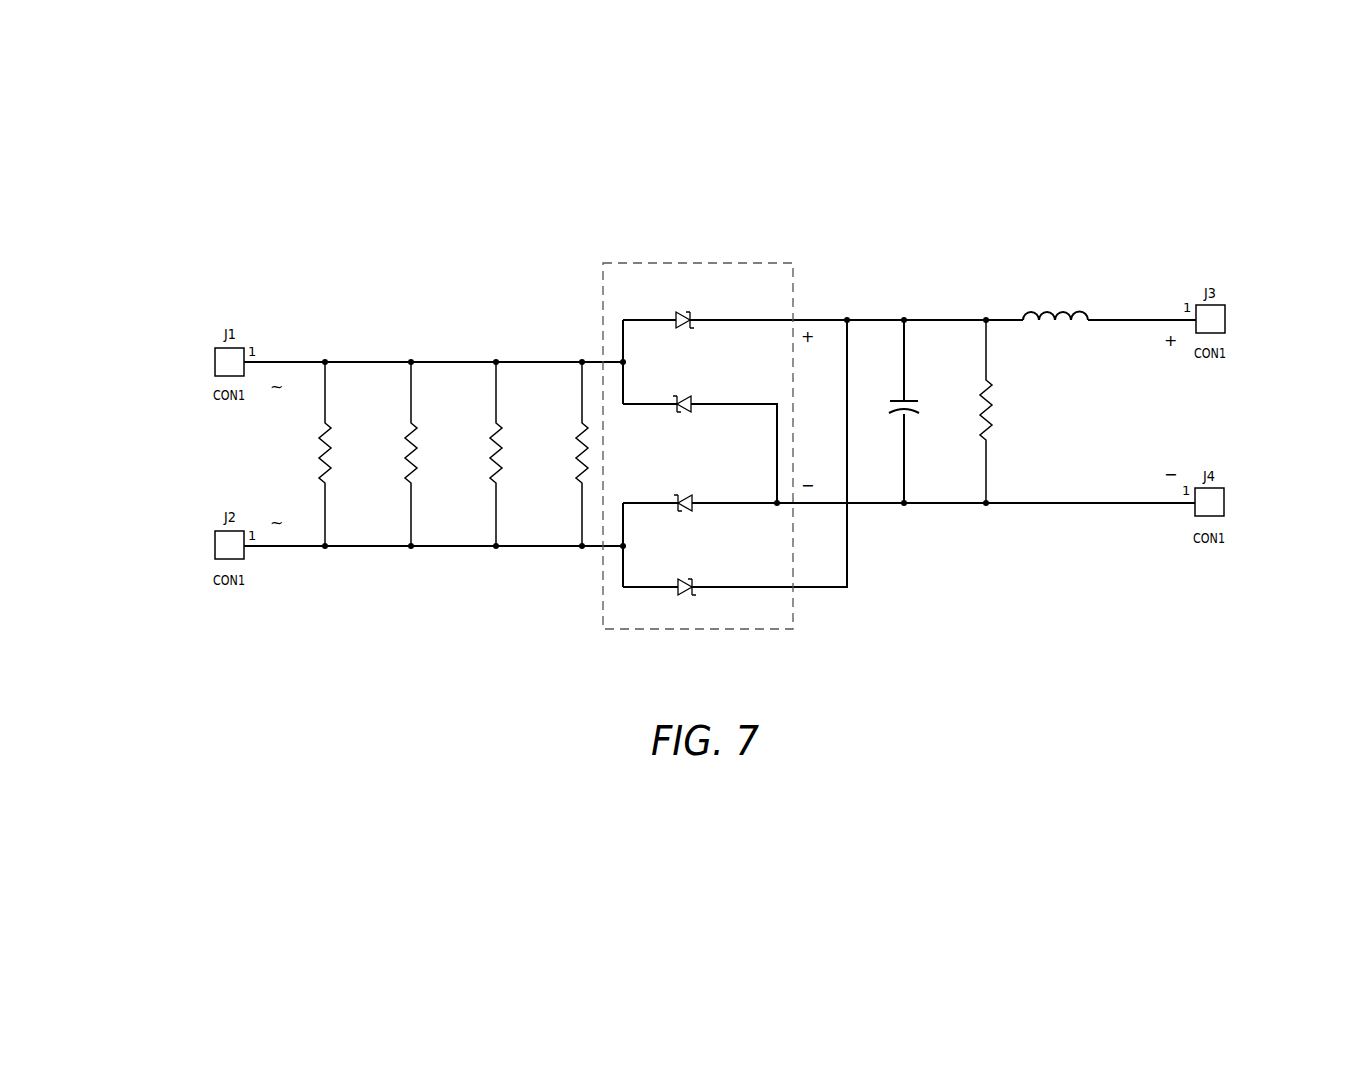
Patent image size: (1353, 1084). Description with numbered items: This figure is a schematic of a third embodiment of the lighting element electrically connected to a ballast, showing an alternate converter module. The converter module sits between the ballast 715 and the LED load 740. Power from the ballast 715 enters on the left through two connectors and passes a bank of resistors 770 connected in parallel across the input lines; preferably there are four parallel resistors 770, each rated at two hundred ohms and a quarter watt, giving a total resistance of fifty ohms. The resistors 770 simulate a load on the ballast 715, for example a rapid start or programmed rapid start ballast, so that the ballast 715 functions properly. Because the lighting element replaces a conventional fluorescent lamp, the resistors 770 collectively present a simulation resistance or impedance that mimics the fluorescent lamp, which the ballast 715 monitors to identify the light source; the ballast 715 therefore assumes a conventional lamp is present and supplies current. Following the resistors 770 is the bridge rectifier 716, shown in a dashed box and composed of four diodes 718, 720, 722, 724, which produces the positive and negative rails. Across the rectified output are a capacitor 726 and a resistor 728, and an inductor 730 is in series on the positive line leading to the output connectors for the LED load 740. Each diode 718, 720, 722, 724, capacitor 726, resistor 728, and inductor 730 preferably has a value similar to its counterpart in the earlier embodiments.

The ballast 715 is at (150, 462).
The bridge rectifier 716 is at (749, 263).
The diode 718 is at (689, 511).
The diode 720 is at (686, 596).
The diode 722 is at (687, 328).
The diode 724 is at (690, 412).
The capacitor 726 is at (916, 409).
The resistor 728 is at (992, 420).
The inductor 730 is at (1034, 312).
The LED load 740 is at (1261, 432).
The resistor 770 is at (318, 453).